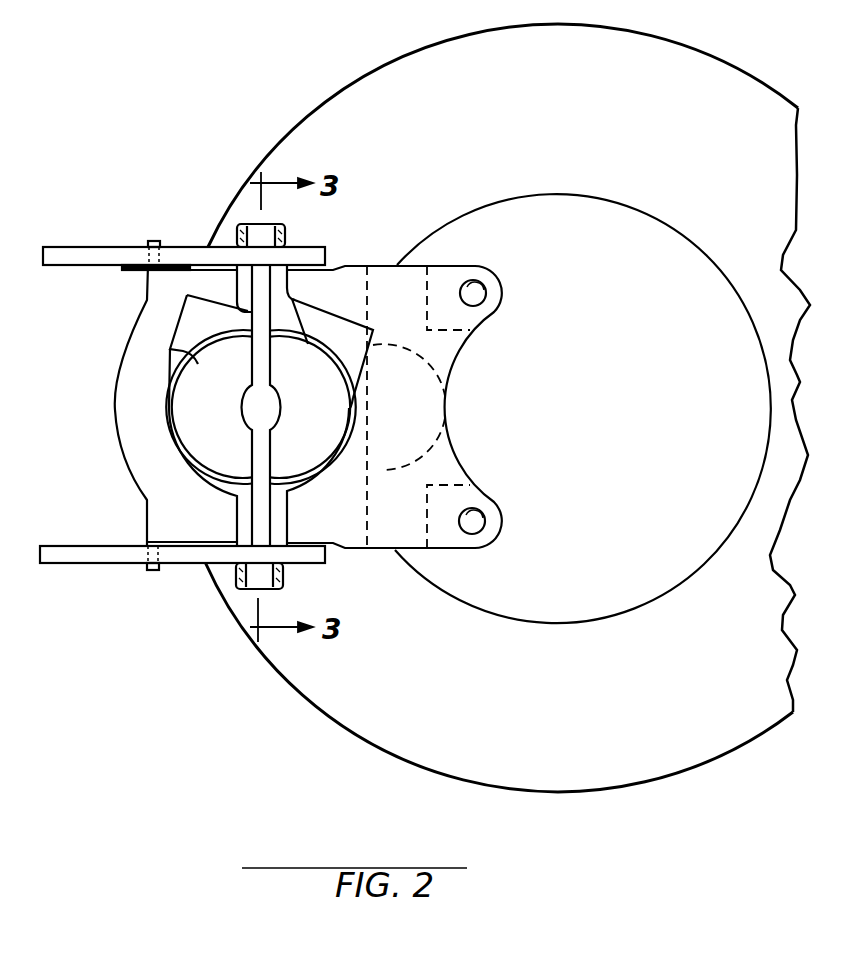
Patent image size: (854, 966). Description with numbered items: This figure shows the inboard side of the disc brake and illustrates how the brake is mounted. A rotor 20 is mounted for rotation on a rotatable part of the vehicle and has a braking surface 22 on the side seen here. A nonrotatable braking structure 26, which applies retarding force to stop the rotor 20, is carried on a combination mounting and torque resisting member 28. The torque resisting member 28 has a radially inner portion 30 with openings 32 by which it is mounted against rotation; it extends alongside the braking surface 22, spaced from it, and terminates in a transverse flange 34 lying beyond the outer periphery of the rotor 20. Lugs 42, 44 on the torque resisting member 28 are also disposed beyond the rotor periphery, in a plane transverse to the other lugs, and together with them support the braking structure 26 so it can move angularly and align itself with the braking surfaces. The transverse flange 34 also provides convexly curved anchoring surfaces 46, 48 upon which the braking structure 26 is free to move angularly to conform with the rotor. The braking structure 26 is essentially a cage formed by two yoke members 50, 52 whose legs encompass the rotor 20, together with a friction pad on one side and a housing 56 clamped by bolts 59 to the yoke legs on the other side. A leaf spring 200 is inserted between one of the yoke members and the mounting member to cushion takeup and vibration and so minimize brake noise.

The rotor 20 is at (393, 760).
The braking surface 22 is at (333, 702).
The nonrotatable braking structure 26 is at (200, 415).
The combination mounting and torque resisting member 28 is at (435, 406).
The radially inner portion 30 is at (424, 405).
The openings 32 is at (485, 292).
The transverse flange 34 is at (143, 510).
The lug 42 is at (153, 571).
The lug 44 is at (157, 242).
The convexly curved anchoring surface 46 is at (152, 546).
The convexly curved anchoring surface 48 is at (147, 268).
The yoke member 50 is at (83, 557).
The yoke member 52 is at (68, 250).
The housing 56 is at (332, 316).
The bolts 59 is at (283, 578).
The leaf spring 200 is at (133, 270).